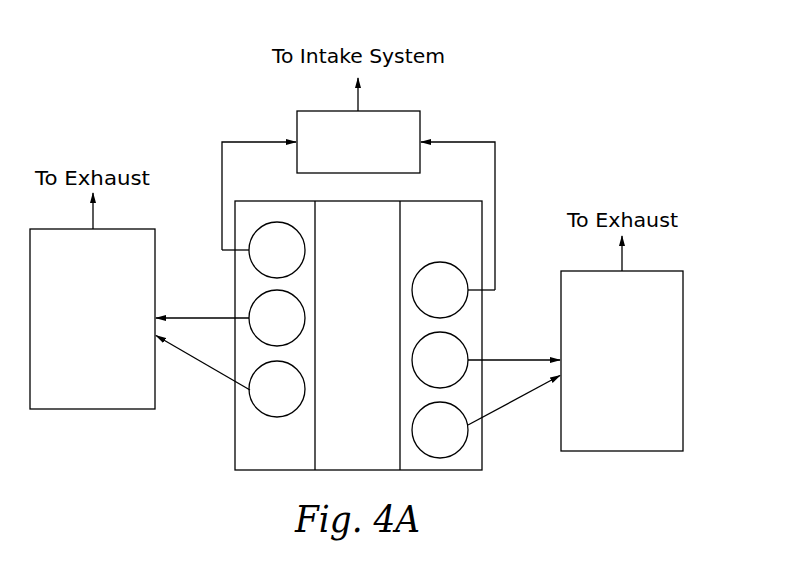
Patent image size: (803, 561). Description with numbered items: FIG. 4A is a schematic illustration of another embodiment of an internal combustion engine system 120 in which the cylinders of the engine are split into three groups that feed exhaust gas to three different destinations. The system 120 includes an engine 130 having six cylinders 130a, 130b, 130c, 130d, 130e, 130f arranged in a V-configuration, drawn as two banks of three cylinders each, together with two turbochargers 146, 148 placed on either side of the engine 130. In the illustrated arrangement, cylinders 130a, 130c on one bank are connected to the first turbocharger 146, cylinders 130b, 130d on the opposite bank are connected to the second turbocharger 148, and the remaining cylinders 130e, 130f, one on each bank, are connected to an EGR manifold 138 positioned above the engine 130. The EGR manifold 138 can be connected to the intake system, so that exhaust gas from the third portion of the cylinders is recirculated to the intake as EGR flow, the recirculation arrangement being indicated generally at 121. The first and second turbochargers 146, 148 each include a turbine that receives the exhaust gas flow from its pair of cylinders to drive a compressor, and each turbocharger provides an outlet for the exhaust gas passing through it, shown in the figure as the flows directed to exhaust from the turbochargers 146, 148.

The system 120 is at (90, 89).
The exhaust gas recirculation system 121 is at (502, 113).
The engine 130 is at (224, 462).
The cylinder 130a is at (421, 441).
The cylinder 130b is at (258, 400).
The cylinder 130c is at (421, 371).
The cylinder 130d is at (258, 329).
The cylinder 130e is at (421, 301).
The cylinder 130f is at (258, 261).
The EGR manifold 138 is at (410, 111).
The first turbocharger 146 is at (607, 371).
The second turbocharger 148 is at (77, 330).